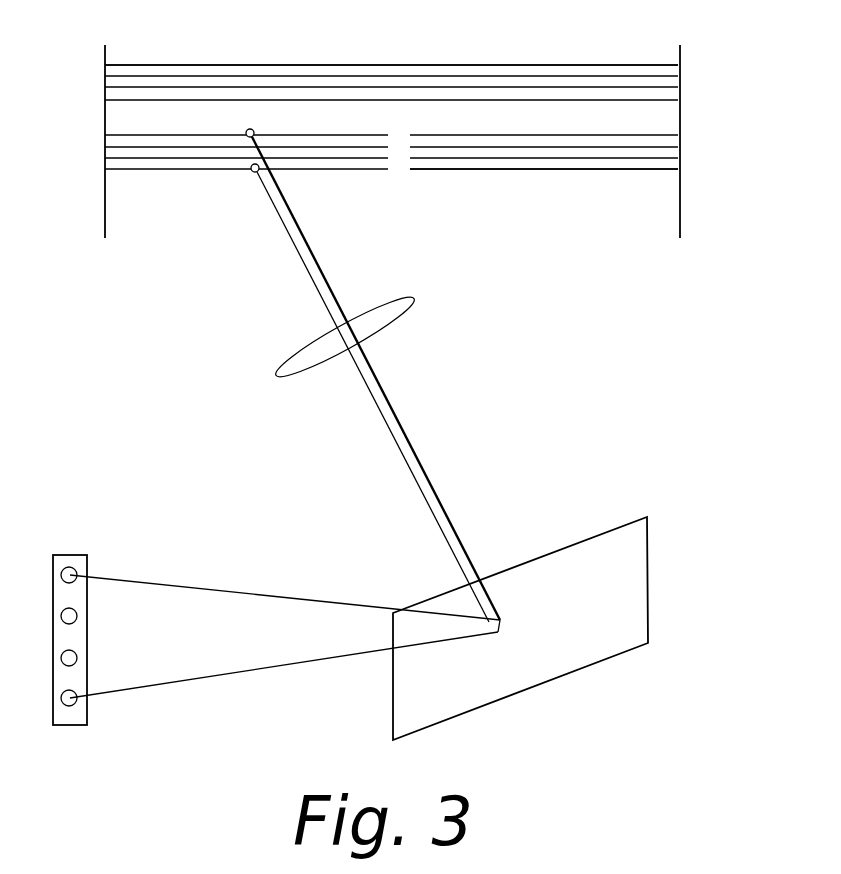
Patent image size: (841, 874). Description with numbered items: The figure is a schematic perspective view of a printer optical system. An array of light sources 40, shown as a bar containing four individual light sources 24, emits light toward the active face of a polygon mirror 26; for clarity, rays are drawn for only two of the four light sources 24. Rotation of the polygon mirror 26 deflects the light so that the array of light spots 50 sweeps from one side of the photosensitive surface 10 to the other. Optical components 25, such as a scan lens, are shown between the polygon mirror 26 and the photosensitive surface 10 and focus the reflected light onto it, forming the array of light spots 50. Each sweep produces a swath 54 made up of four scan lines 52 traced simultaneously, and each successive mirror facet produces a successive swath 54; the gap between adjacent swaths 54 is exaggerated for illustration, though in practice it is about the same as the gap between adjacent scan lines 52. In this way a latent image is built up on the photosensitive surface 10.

The photosensitive surface 10 is at (400, 121).
The light sources 24 is at (70, 563).
The optical components 25 is at (302, 378).
The polygon mirror 26 is at (648, 585).
The array of light sources 40 is at (72, 726).
The array of light spots 50 is at (251, 130).
The scan lines 52 is at (495, 63).
The swath 54 is at (94, 63).